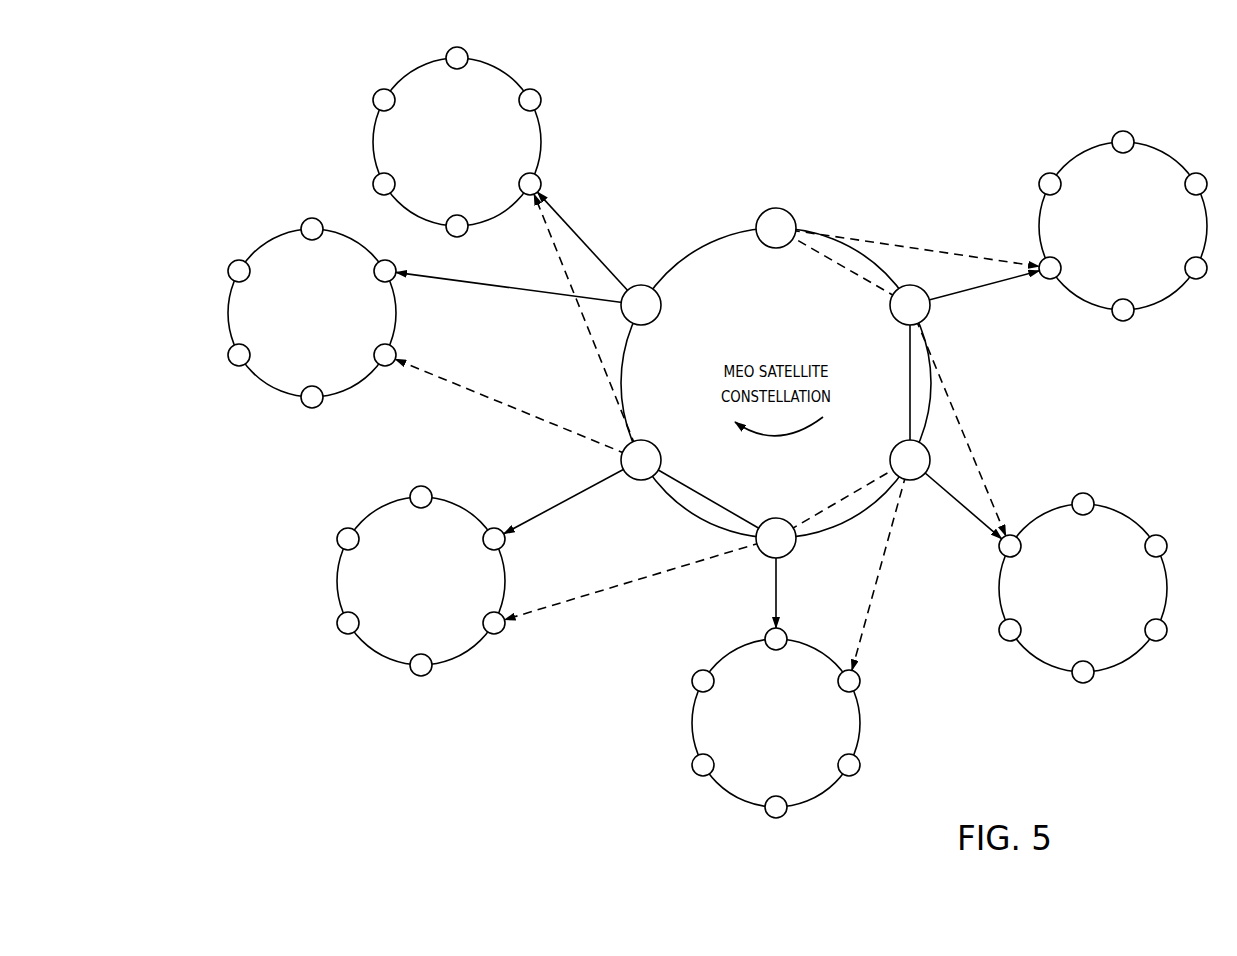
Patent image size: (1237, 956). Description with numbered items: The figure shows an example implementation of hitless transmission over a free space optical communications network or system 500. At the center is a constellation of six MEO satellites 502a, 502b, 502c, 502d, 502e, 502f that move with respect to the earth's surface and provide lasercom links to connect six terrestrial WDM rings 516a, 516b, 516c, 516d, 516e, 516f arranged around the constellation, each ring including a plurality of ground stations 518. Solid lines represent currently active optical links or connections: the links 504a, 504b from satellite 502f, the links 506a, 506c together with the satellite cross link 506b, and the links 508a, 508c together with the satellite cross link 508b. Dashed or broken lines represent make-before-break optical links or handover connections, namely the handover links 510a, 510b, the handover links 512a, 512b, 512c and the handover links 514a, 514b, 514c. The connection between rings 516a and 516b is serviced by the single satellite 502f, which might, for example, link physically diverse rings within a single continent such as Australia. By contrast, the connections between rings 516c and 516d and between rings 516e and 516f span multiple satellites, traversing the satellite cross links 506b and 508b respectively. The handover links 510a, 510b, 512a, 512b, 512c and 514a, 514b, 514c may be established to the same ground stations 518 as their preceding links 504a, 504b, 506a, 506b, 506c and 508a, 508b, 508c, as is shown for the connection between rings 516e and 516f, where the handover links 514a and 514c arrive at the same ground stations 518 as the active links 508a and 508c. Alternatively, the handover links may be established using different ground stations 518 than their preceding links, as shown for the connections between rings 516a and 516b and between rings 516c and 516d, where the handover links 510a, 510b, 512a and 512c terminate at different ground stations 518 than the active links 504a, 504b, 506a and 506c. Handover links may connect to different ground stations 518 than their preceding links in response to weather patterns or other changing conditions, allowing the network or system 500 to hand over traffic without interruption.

The free space optical communications network or system 500 is at (893, 133).
The MEO satellite 502a is at (776, 208).
The MEO satellite 502b is at (890, 308).
The MEO satellite 502c is at (898, 444).
The MEO satellite 502d is at (776, 518).
The MEO satellite 502e is at (656, 446).
The MEO satellite 502f is at (662, 308).
The active optical link 504a is at (597, 256).
The active optical link 504b is at (492, 288).
The active optical link 506a is at (560, 502).
The satellite cross link 506b is at (690, 490).
The active optical link 506c is at (773, 590).
The active optical link 508a is at (958, 503).
The satellite cross link 508b is at (905, 374).
The active optical link 508c is at (983, 288).
The handover link 510a is at (594, 352).
The handover link 510b is at (490, 400).
The handover link 512a is at (600, 594).
The handover link 512b is at (838, 506).
The handover link 512c is at (873, 600).
The handover link 514a is at (966, 432).
The handover link 514b is at (838, 264).
The handover link 514c is at (912, 247).
The terrestrial WDM ring 516a is at (512, 77).
The terrestrial WDM ring 516b is at (266, 242).
The terrestrial WDM ring 516c is at (372, 510).
The terrestrial WDM ring 516d is at (831, 790).
The terrestrial WDM ring 516e is at (1138, 654).
The terrestrial WDM ring 516f is at (1178, 292).
The ground station 518 is at (372, 98).